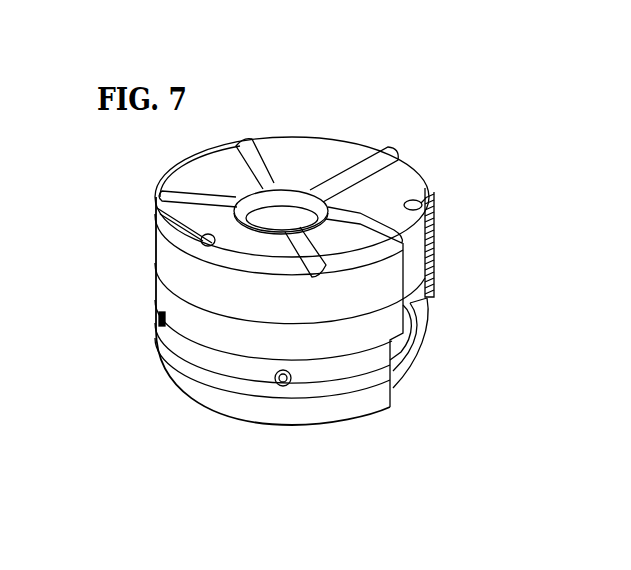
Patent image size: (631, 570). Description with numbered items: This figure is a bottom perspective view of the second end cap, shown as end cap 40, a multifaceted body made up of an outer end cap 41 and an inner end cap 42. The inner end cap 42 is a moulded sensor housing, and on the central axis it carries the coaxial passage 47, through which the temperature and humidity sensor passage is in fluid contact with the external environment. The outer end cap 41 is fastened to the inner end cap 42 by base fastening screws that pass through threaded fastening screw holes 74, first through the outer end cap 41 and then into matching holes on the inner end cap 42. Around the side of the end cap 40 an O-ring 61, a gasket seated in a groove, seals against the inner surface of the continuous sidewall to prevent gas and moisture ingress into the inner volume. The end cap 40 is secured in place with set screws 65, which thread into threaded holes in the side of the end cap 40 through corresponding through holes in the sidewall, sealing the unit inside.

The end cap 40 is at (435, 275).
The outer end cap 41 is at (383, 186).
The inner end cap 42 is at (234, 417).
The coaxial passage 47 is at (290, 218).
The O-ring 61 is at (400, 353).
The set screws 65 is at (158, 312).
The threaded fastening screw holes 74 is at (430, 196).